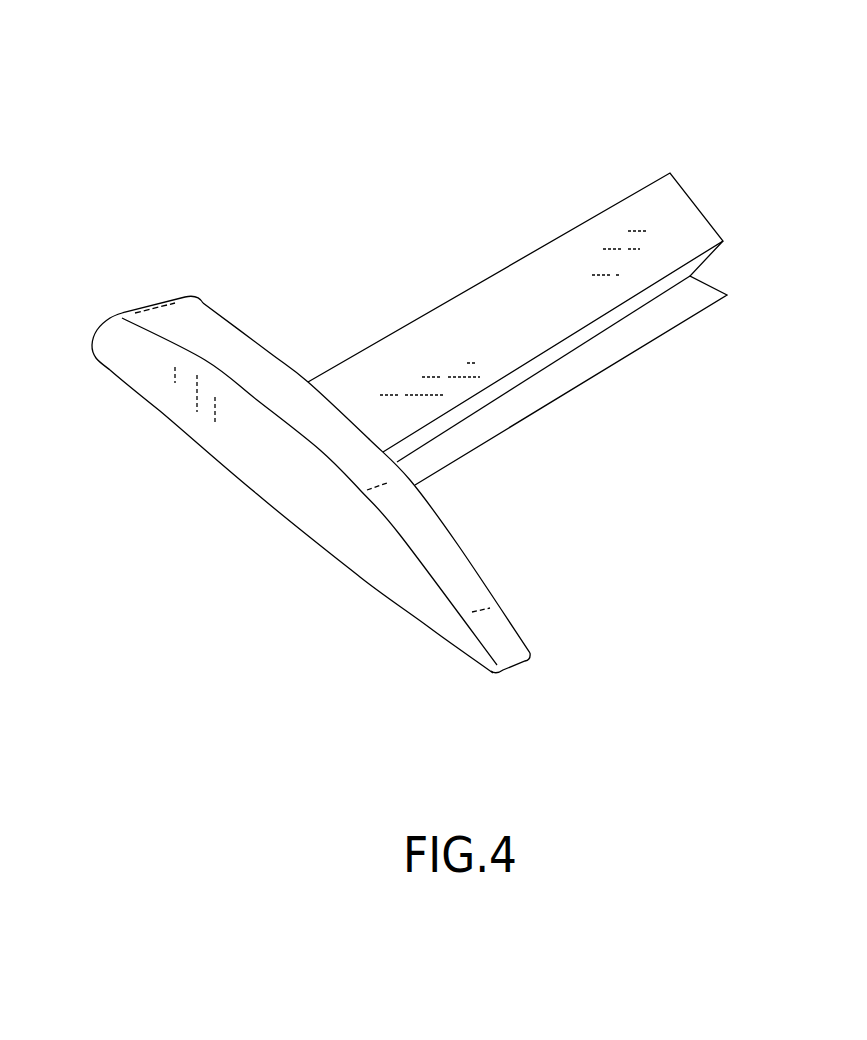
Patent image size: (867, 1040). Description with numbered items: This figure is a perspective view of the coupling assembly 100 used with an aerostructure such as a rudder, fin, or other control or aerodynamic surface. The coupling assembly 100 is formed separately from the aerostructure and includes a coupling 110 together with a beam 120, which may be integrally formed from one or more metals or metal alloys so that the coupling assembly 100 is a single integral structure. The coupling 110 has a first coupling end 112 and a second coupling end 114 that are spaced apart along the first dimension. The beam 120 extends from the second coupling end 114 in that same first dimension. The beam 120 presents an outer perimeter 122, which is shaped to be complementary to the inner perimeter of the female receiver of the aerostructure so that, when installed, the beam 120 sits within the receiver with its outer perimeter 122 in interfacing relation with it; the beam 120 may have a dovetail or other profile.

The coupling assembly 100 is at (434, 95).
The coupling 110 is at (215, 348).
The first coupling end 112 is at (292, 483).
The second coupling end 114 is at (458, 545).
The beam 120 is at (568, 227).
The outer perimeter 122 is at (535, 320).